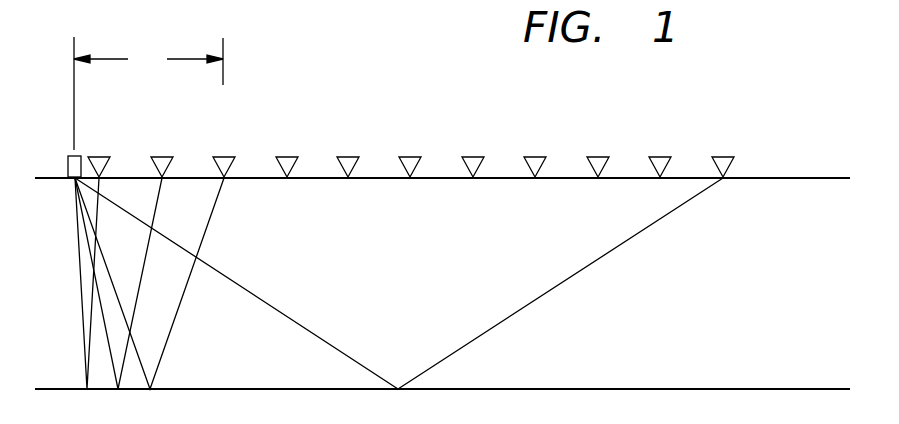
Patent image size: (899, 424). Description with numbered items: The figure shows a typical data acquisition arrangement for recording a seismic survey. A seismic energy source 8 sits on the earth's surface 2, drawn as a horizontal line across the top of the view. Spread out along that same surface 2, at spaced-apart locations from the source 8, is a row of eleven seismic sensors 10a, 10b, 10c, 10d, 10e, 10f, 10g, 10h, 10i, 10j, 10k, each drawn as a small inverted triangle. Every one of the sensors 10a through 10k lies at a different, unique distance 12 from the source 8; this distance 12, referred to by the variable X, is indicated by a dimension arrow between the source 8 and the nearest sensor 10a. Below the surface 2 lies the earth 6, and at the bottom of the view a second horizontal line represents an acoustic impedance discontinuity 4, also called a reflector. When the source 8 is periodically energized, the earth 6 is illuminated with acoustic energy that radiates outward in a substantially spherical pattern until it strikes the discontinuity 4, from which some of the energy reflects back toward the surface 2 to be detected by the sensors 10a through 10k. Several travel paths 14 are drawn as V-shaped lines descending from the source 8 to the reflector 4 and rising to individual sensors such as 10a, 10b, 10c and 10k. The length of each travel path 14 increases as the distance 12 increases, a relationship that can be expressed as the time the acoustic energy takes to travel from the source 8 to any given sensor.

The earth's surface 2 is at (812, 177).
The acoustic impedance discontinuity 4 is at (730, 388).
The earth 6 is at (756, 303).
The seismic energy source 8 is at (68, 157).
The seismic sensor 10a is at (100, 155).
The seismic sensor 10b is at (163, 155).
The seismic sensor 10c is at (225, 155).
The seismic sensor 10d is at (288, 155).
The seismic sensor 10e is at (349, 155).
The seismic sensor 10f is at (411, 155).
The seismic sensor 10g is at (474, 155).
The seismic sensor 10h is at (536, 155).
The seismic sensor 10i is at (599, 155).
The seismic sensor 10j is at (661, 155).
The seismic sensor 10k is at (724, 155).
The distance 12 is at (115, 58).
The travel path 14 is at (263, 300).